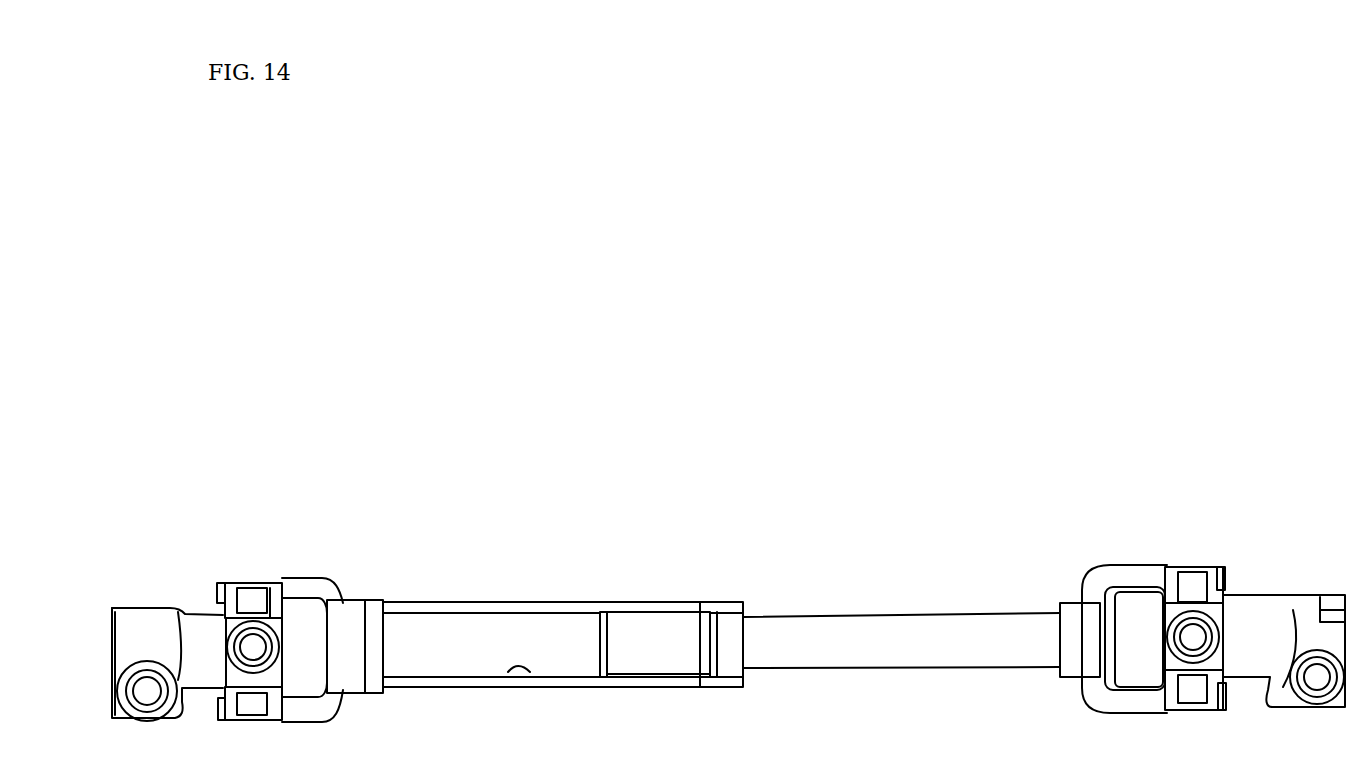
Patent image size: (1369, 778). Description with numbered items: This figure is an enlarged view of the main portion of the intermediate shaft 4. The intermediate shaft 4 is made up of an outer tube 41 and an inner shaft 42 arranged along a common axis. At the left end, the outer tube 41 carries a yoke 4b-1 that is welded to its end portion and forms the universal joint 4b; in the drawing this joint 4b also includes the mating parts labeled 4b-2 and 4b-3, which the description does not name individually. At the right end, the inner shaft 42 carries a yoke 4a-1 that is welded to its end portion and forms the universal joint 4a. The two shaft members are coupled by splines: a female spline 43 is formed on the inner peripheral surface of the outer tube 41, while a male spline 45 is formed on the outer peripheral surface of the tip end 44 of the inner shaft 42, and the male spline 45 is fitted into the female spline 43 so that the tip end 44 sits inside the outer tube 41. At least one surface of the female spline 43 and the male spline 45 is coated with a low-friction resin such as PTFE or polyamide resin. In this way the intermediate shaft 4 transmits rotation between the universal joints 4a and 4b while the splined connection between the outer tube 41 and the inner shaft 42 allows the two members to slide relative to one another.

The intermediate shaft 4 is at (714, 438).
The universal joint 4a is at (1242, 538).
The yoke 4a-1 is at (1117, 567).
The universal joint 4b is at (207, 521).
The yoke 4b-1 is at (307, 578).
The second joint coupling yoke 4b-2 is at (142, 652).
The cross shaft / spider 4b-3 is at (265, 585).
The outer tube 41 is at (552, 596).
The inner shaft 42 is at (914, 598).
The female spline 43 is at (527, 672).
The tip end 44 is at (688, 634).
The male spline 45 is at (650, 675).